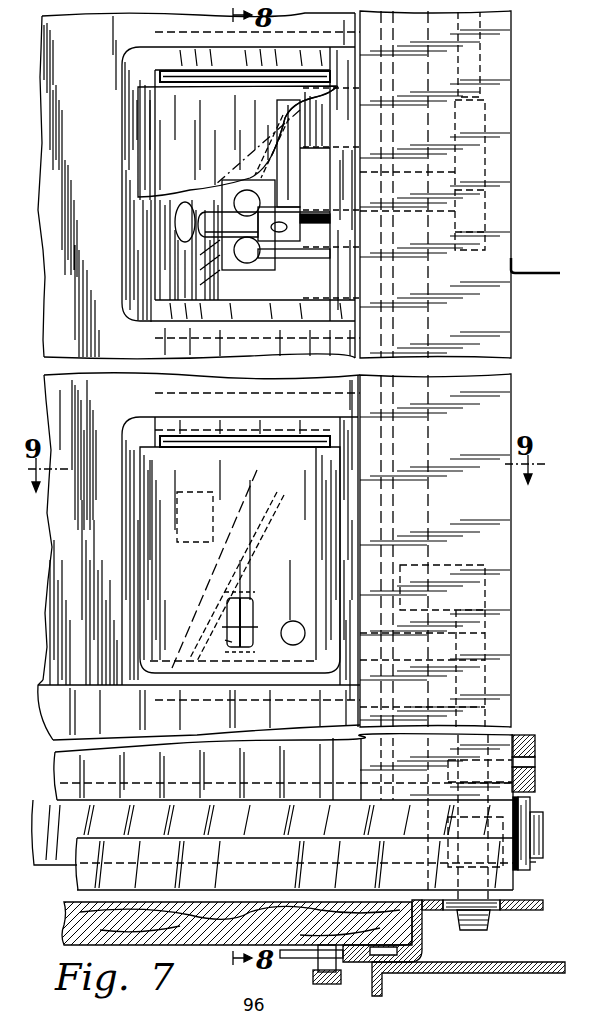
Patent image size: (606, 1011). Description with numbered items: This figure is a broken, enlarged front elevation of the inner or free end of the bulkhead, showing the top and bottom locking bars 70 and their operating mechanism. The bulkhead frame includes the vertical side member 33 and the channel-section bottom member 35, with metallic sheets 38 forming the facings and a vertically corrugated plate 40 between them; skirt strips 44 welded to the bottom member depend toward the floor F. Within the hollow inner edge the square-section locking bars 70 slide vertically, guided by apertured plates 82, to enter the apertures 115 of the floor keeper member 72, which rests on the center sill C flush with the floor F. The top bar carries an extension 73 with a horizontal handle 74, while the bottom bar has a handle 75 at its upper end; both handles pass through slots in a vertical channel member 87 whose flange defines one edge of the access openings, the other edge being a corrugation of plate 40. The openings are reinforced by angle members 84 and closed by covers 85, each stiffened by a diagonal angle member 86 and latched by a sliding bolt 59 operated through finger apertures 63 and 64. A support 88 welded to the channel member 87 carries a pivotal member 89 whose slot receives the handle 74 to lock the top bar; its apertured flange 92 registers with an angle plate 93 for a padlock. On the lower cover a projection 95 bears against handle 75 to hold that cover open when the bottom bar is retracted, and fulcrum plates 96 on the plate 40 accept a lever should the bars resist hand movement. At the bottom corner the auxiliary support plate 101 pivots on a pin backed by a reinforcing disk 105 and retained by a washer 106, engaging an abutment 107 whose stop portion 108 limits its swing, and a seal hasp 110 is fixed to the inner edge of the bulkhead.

The vertical side member 33 is at (506, 407).
The bottom member 35 is at (264, 831).
The metallic sheets 38 is at (88, 116).
The corrugated plate 40 is at (142, 248).
The skirt strips 44 is at (257, 888).
The bolt 59 is at (245, 610).
The aperture 63 is at (218, 642).
The aperture 64 is at (302, 630).
The locking bars 70 is at (486, 913).
The floor keeper member 72 is at (421, 943).
The extension 73 is at (482, 66).
The handle 74 is at (212, 216).
The handle 75 is at (398, 607).
The lower guides 82 is at (498, 167).
The angle members 84 is at (247, 66).
The cover 85 is at (230, 127).
The diagonally extending angle member 86 is at (272, 490).
The vertical channel member 87 is at (353, 141).
The support 88 is at (317, 115).
The pivotal member 89 is at (300, 172).
The flange 92 is at (298, 220).
The angle plate 93 is at (298, 252).
The vertical portion 95 is at (187, 492).
The fulcrum plates 96 is at (262, 265).
The plate 101 is at (533, 802).
The reinforcing disk 105 is at (536, 862).
The washer 106 is at (543, 828).
The abutment 107 is at (536, 740).
The stop portion 108 is at (536, 777).
The seal hasp 110 is at (533, 278).
The apertures 115 is at (503, 897).
The floor F is at (63, 915).
The center sill C is at (510, 965).